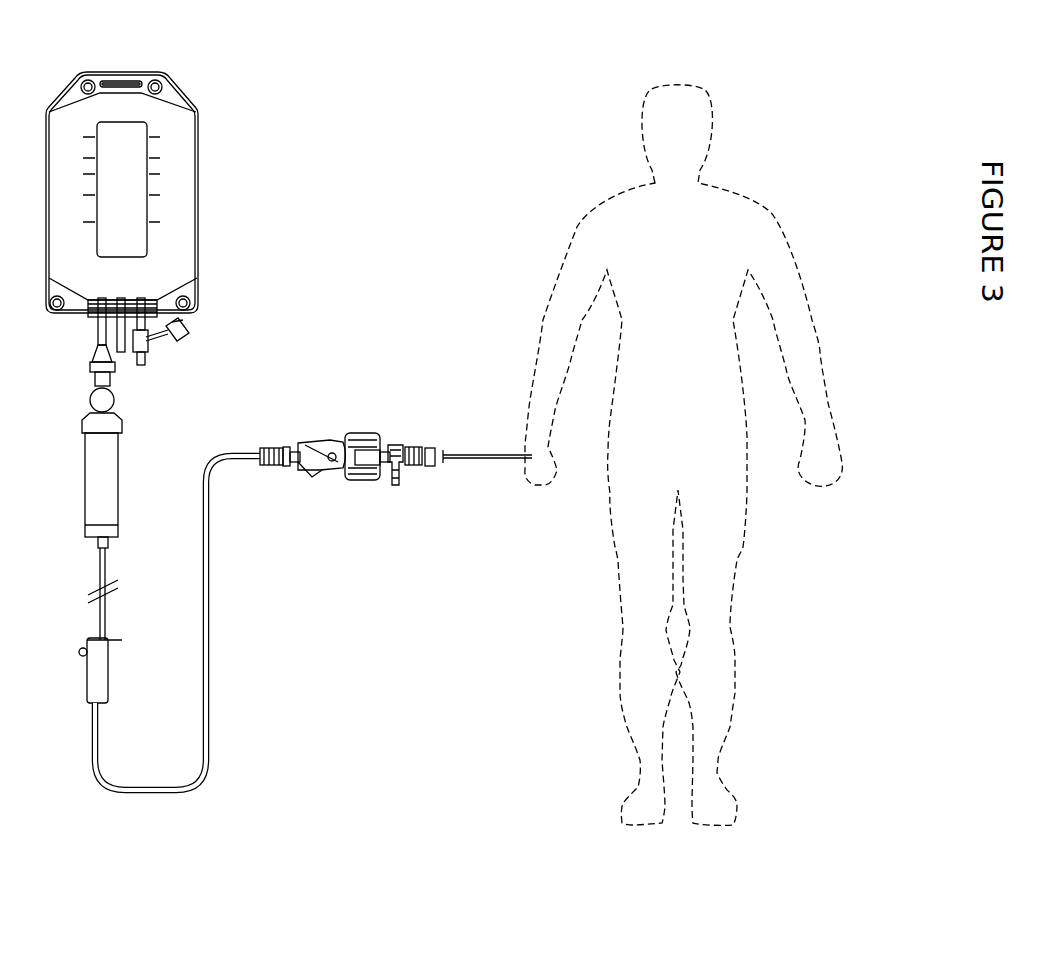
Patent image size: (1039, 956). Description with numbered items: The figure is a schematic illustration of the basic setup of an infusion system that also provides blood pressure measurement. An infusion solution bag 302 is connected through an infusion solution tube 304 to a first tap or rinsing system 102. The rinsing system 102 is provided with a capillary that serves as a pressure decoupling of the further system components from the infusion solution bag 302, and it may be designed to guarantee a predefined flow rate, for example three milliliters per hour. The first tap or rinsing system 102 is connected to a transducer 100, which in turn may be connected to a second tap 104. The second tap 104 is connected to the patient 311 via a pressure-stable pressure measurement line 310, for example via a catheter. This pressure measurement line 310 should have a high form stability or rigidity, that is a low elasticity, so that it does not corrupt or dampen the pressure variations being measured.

The infusion solution bag 302 is at (199, 221).
The infusion solution tube 304 is at (230, 629).
The transducer 100 is at (358, 432).
The first tap or rinsing system 102 is at (310, 437).
The second tap 104 is at (400, 445).
The pressure measurement line 310 is at (472, 452).
The patient 311 is at (800, 300).